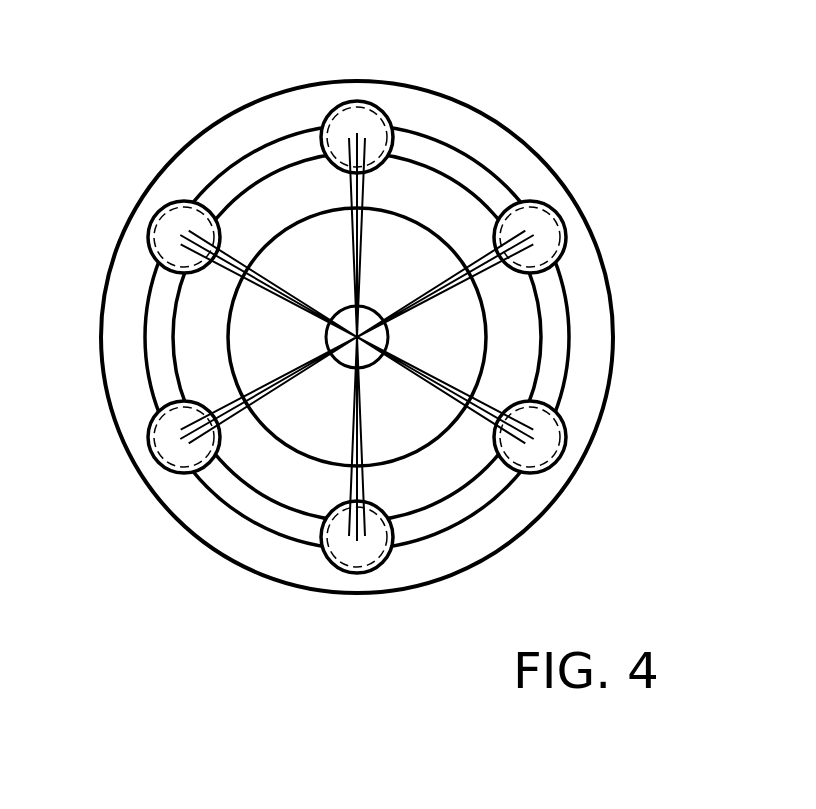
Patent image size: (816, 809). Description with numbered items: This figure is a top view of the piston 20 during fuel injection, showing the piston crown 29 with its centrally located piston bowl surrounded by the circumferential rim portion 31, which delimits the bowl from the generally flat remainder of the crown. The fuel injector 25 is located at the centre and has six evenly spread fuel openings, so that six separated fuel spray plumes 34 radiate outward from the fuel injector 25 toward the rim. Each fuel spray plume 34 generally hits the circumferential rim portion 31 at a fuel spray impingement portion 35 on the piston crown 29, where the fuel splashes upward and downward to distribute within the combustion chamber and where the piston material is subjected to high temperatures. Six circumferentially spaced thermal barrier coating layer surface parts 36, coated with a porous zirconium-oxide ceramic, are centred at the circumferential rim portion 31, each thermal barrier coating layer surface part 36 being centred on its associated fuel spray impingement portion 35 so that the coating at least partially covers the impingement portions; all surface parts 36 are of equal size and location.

The piston 20 is at (612, 282).
The fuel injector 25 is at (388, 337).
The piston crown 29 is at (245, 132).
The circumferential rim portion 31 is at (245, 500).
The fuel spray plumes 34 is at (458, 283).
The fuel spray impingement portion 35 is at (330, 118).
The thermal barrier coating layer surface parts 36 is at (357, 106).